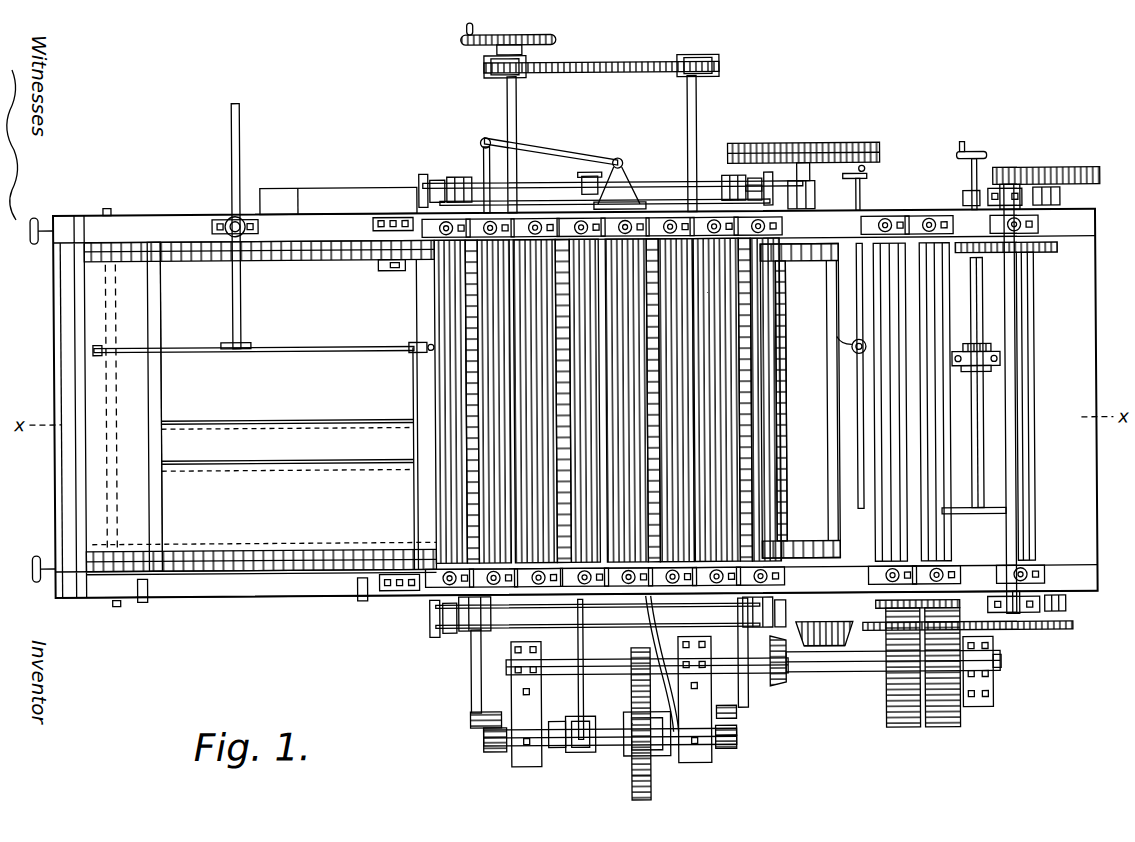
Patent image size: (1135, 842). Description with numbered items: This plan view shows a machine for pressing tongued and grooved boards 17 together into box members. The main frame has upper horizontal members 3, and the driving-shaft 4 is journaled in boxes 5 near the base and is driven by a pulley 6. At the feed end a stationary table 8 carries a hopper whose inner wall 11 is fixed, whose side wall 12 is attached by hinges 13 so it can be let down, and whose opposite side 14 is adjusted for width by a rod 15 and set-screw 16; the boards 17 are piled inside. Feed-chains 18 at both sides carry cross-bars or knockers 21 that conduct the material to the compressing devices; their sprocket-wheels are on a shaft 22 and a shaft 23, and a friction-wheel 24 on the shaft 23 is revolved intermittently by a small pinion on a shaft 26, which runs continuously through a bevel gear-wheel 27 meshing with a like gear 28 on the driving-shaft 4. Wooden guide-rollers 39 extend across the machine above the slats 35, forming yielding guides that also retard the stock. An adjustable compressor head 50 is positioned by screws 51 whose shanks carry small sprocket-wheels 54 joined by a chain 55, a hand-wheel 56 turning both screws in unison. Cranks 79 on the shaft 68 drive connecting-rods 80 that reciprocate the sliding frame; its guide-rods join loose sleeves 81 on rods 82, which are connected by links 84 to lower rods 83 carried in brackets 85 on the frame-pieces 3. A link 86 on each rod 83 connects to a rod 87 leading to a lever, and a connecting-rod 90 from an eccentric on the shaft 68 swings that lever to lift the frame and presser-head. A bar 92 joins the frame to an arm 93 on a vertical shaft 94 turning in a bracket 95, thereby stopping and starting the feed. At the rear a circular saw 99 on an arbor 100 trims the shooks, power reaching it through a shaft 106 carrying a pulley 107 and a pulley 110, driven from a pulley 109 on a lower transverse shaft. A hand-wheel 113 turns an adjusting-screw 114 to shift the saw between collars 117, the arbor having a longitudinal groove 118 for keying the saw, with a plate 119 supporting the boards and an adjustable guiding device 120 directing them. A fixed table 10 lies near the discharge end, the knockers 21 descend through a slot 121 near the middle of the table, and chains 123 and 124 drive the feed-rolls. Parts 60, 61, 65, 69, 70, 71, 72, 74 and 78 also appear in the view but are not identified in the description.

The upper horizontal frame members 3 is at (280, 598).
The driving-shaft 4 is at (503, 668).
The boxes 5 is at (508, 680).
The pulley 6 is at (940, 736).
The stationary table 8 is at (260, 405).
The fixed table 10 is at (917, 400).
The inner wall 11 is at (410, 366).
The side wall 12 is at (190, 575).
The hinges 13 is at (142, 603).
The adjustable side wall 14 is at (181, 346).
The rod 15 is at (241, 112).
The set-screw 16 is at (226, 222).
The tongued and grooved boards 17 is at (287, 447).
The feed-chains 18 is at (152, 245).
The knockers 21 is at (145, 292).
The shaft 22 is at (107, 208).
The shaft 23 is at (803, 170).
The friction-wheel 24 is at (830, 150).
The shaft 26 is at (820, 652).
The bevel gear-wheel 27 is at (840, 652).
The bevel gear 28 is at (776, 690).
The slats 35 is at (460, 400).
The guide-rollers 39 is at (445, 500).
The compressor head 50 is at (437, 312).
The screws 51 is at (508, 98).
The sprocket-wheels 54 is at (487, 68).
The chain 55 is at (606, 66).
The hand-wheel 56 is at (462, 43).
The catch 60 is at (392, 275).
The pin 61 is at (376, 270).
The gear 65 is at (715, 752).
The shaft 68 is at (552, 750).
The gear 69 is at (490, 740).
The gear 70 is at (630, 795).
The gear wheel 71 is at (634, 672).
The sprocket 72 is at (655, 758).
The sprocket 74 is at (645, 760).
The gear 78 is at (680, 748).
The cranks 79 is at (470, 727).
The connecting-rods 80 is at (470, 680).
The loose sleeves 81 is at (440, 190).
The rods 82 is at (725, 190).
The rods 83 is at (423, 186).
The links 84 is at (455, 183).
The brackets 85 is at (419, 185).
The link 86 is at (588, 178).
The rod 87 is at (580, 190).
The connecting-rod 90 is at (575, 756).
The bar 92 is at (482, 146).
The arm 93 is at (530, 150).
The vertical shaft 94 is at (618, 162).
The bracket 95 is at (632, 190).
The circular saw 99 is at (999, 364).
The arbor 100 is at (1033, 476).
The shaft 106 is at (1014, 588).
The pulley 107 is at (1008, 192).
The pulley 109 is at (1068, 174).
The pulley 110 is at (1050, 260).
The hand-wheel 113 is at (975, 160).
The adjusting-screw 114 is at (972, 185).
The collars 117 is at (985, 355).
The longitudinal groove 118 is at (982, 402).
The plate 119 is at (990, 378).
The adjustable guiding device 120 is at (862, 176).
The slot 121 is at (860, 250).
The chain 123 is at (1060, 640).
The chain 124 is at (985, 634).